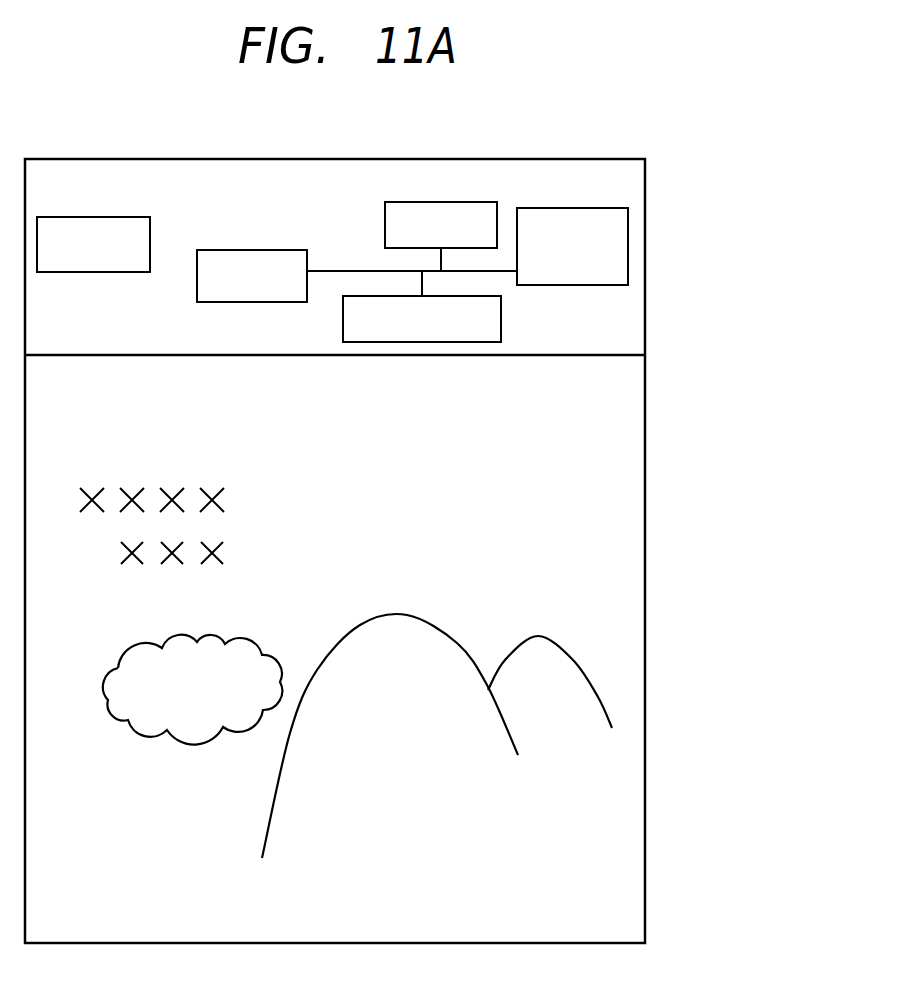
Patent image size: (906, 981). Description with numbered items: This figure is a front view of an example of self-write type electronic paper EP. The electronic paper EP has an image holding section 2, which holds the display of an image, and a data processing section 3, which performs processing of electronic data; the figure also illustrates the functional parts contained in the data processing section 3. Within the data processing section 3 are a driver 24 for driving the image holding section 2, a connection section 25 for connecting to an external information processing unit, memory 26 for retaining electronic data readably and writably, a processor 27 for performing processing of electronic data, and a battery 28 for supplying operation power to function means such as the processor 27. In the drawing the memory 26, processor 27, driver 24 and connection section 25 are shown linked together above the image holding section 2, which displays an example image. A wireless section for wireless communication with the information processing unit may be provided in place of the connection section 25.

The image holding section 2 is at (646, 500).
The data processing section 3 is at (646, 230).
The self-write type electronic paper EP is at (692, 388).
The driver 24 is at (253, 302).
The connection section 25 is at (575, 208).
The memory 26 is at (452, 202).
The processor 27 is at (422, 342).
The battery 28 is at (100, 217).